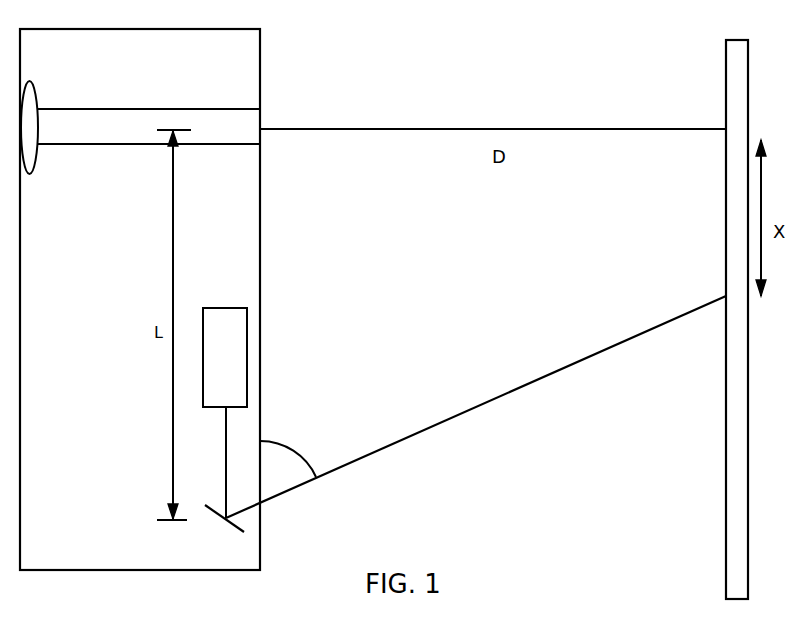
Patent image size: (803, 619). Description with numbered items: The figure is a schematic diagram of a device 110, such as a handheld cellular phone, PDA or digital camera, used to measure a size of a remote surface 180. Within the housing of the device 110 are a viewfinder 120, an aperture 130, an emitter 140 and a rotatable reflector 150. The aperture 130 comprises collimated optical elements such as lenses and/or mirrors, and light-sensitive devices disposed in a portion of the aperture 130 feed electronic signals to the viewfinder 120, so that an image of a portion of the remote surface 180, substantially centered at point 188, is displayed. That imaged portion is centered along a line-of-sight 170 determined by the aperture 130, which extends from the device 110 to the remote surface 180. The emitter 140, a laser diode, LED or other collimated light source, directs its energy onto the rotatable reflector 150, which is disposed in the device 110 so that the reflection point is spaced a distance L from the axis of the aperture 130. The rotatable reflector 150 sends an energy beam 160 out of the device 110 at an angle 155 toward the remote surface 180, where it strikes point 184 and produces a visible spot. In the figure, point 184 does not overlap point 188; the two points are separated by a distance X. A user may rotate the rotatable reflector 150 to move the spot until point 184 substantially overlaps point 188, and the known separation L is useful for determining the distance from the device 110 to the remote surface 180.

The device 110 is at (65, 572).
The viewfinder 120 is at (30, 170).
The aperture 130 is at (215, 108).
The emitter 140 is at (223, 307).
The rotatable reflector 150 is at (226, 522).
The angle 155 is at (295, 450).
The energy beam 160 is at (451, 414).
The line-of-sight 170 is at (356, 128).
The remote surface 180 is at (726, 510).
The point 184 is at (720, 291).
The point 188 is at (720, 124).